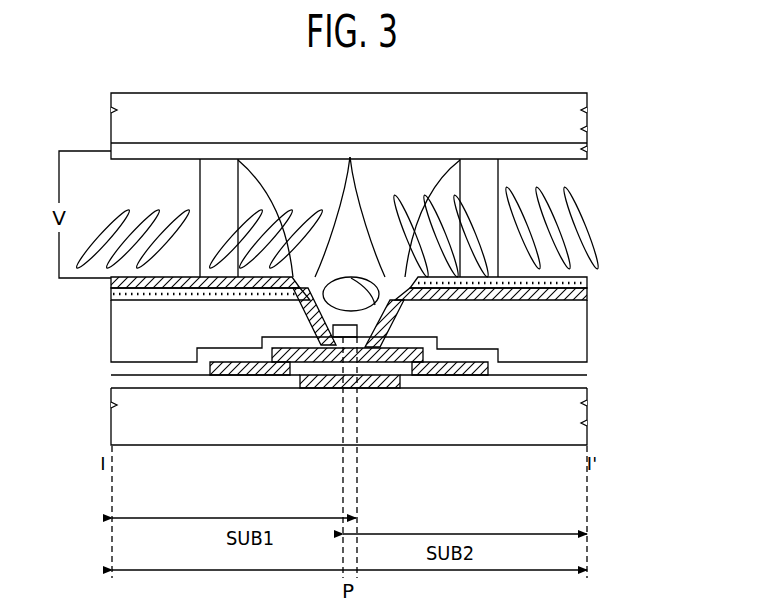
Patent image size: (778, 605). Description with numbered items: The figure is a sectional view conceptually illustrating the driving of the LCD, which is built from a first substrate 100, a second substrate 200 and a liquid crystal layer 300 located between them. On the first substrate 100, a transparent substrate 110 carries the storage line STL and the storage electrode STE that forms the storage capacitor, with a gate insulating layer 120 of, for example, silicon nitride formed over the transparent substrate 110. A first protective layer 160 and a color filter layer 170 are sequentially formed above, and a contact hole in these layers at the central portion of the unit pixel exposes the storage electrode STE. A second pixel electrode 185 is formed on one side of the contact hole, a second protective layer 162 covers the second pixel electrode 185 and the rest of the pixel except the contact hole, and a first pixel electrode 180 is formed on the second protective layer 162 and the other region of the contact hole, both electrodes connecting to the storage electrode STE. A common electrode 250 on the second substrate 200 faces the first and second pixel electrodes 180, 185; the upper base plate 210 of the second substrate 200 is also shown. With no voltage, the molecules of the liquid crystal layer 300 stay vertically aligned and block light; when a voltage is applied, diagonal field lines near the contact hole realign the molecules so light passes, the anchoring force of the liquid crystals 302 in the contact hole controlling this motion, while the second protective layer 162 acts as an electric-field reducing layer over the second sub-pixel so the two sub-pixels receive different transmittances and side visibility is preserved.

The first substrate 100 is at (373, 358).
The transparent substrate 110 is at (580, 424).
The gate insulating layer 120 is at (580, 390).
The first protective layer 160 is at (580, 367).
The second protective layer 162 is at (111, 300).
The color filter layer 170 is at (580, 332).
The first pixel electrode 180 is at (111, 281).
The second pixel electrode 185 is at (511, 317).
The second substrate 200 is at (408, 132).
The upper base substrate 210 is at (580, 125).
The common electrode 250 is at (580, 150).
The liquid crystal layer 300 is at (365, 180).
The liquid crystals 302 is at (358, 262).
The storage line STL is at (320, 376).
The storage electrode STE is at (453, 376).